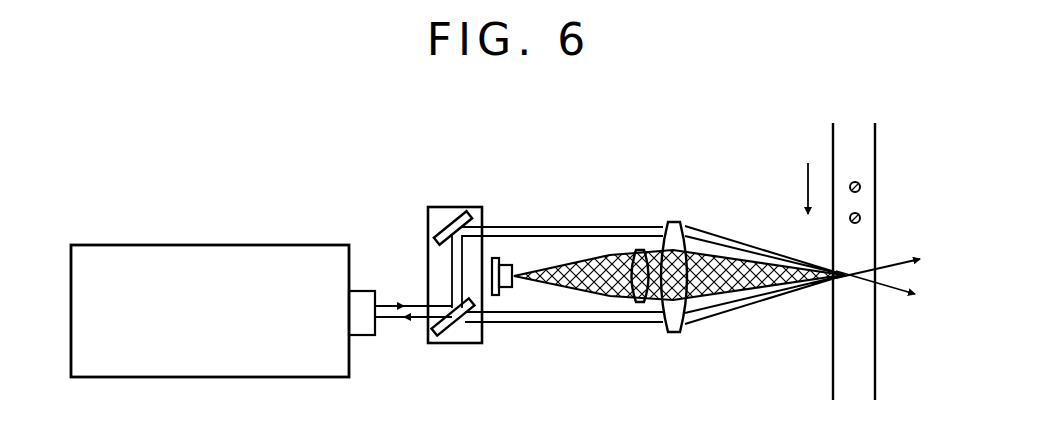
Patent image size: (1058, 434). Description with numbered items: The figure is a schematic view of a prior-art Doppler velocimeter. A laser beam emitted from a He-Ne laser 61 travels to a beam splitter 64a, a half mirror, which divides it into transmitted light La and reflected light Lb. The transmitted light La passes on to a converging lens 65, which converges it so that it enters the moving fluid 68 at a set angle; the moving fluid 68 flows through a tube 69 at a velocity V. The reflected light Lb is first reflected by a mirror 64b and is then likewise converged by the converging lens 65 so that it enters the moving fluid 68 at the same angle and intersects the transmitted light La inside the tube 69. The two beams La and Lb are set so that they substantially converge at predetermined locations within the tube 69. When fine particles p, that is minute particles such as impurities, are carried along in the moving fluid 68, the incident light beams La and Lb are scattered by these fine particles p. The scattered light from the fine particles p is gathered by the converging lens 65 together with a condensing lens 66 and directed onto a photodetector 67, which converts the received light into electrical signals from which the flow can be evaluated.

The laser 61 is at (205, 252).
The beam splitter 64a is at (458, 327).
The mirror 64b is at (453, 221).
The photodetector 67 is at (503, 257).
The condensing lens 66 is at (640, 250).
The converging lens 65 is at (673, 222).
The moving fluid 68 is at (858, 160).
The tube 69 is at (862, 360).
The reflected light Lb is at (455, 280).
The transmitted light La is at (580, 328).
The velocity V is at (807, 171).
The fine particles p is at (861, 187).